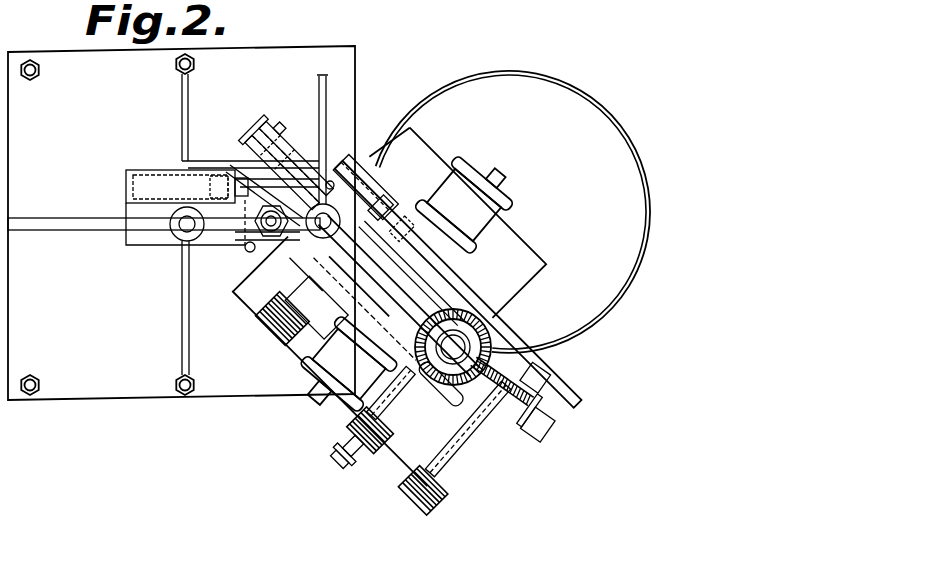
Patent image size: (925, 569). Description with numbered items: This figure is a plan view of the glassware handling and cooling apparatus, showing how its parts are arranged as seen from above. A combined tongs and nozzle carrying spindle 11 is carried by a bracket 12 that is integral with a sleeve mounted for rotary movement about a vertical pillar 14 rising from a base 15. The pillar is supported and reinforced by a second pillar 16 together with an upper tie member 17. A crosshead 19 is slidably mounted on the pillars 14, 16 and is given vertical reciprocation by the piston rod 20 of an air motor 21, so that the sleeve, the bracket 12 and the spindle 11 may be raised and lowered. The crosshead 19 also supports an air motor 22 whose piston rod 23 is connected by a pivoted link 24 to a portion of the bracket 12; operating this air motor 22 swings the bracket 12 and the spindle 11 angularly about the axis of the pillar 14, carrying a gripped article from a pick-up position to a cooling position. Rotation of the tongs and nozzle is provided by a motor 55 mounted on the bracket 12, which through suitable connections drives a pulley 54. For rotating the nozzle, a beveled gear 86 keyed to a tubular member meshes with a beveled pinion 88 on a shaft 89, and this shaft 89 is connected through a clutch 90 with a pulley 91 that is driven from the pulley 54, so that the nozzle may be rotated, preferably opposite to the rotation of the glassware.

The spindle 11 is at (468, 338).
The bracket 12 is at (405, 312).
The vertical pillar 14 is at (285, 250).
The base 15 is at (232, 388).
The second pillar 16 is at (182, 233).
The upper tie member 17 is at (248, 240).
The crosshead 19 is at (135, 213).
The piston rod 20 is at (268, 210).
The air motor 21 is at (304, 250).
The air motor 22 is at (148, 178).
The piston rod 23 is at (298, 190).
The pivoted link 24 is at (356, 170).
The pulley 54 is at (426, 502).
The motor 55 is at (486, 216).
The beveled gear 86 is at (502, 414).
The beveled pinion 88 is at (420, 367).
The shaft 89 is at (380, 419).
The clutch 90 is at (360, 454).
The pulley 91 is at (357, 421).